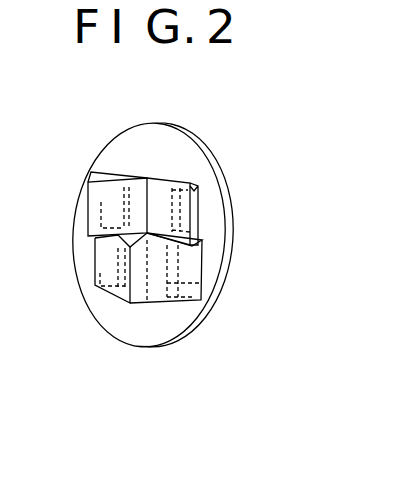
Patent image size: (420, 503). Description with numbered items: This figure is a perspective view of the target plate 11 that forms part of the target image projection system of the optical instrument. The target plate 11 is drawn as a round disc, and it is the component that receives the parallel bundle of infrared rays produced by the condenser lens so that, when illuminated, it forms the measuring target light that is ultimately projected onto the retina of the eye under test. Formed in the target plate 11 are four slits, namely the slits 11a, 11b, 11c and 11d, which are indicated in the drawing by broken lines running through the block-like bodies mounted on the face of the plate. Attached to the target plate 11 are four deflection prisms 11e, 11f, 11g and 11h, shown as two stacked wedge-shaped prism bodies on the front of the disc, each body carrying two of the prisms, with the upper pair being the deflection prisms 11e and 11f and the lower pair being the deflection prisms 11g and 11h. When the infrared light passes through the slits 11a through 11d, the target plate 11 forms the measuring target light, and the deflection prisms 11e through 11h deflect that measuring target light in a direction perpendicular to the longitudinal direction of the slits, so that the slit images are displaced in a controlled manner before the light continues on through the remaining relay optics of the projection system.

The target plate 11 is at (186, 161).
The slit 11a is at (125, 217).
The slit 11b is at (170, 217).
The slit 11c is at (118, 273).
The slit 11d is at (170, 289).
The deflection prism 11e is at (108, 193).
The deflection prism 11f is at (188, 195).
The deflection prism 11g is at (112, 287).
The deflection prism 11h is at (160, 288).